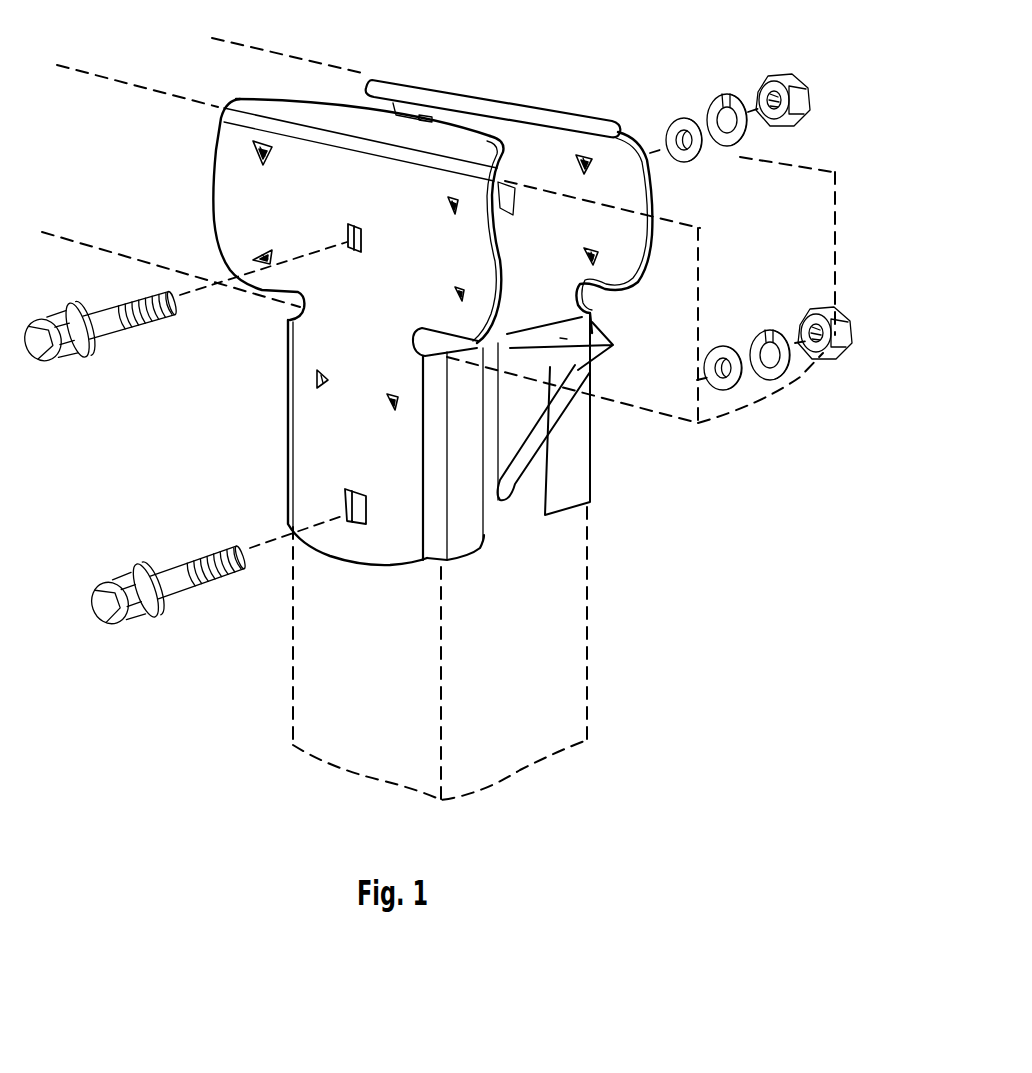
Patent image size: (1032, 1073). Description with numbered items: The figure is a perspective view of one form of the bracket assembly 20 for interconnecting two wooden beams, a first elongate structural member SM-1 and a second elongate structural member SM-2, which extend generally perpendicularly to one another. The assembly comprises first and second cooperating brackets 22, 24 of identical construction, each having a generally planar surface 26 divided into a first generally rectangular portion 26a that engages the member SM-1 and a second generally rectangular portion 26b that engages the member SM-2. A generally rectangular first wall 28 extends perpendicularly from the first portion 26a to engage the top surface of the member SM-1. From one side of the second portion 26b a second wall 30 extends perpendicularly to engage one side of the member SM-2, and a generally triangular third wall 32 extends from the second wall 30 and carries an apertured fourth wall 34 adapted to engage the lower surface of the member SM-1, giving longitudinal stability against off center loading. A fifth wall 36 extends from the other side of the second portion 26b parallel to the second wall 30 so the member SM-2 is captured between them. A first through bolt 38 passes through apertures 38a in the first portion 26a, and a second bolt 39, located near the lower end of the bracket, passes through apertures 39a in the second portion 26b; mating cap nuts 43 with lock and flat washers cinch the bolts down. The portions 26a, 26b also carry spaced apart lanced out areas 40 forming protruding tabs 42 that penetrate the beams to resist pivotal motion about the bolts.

The bracket assembly 20 is at (480, 74).
The first cooperating bracket 22 is at (391, 332).
The second cooperating bracket 24 is at (497, 108).
The generally planar surface 26 is at (337, 328).
The first generally rectangularly shaped portion 26a is at (432, 221).
The second generally rectangularly shaped portion 26b is at (357, 442).
The first wall 28 is at (318, 107).
The second wall 30 is at (460, 518).
The third wall 32 is at (515, 400).
The fourth wall 34 is at (577, 335).
The fifth wall 36 is at (577, 468).
The first through bolt 38 is at (92, 308).
The apertures 38a is at (353, 258).
The second bolt 39 is at (165, 568).
The apertures 39a is at (360, 495).
The lanced out areas 40 is at (264, 250).
The protruding tabs 42 is at (447, 199).
The cap nuts 43 is at (786, 72).
The first elongate structural member SM-1 is at (730, 187).
The second elongate structural member SM-2 is at (563, 687).